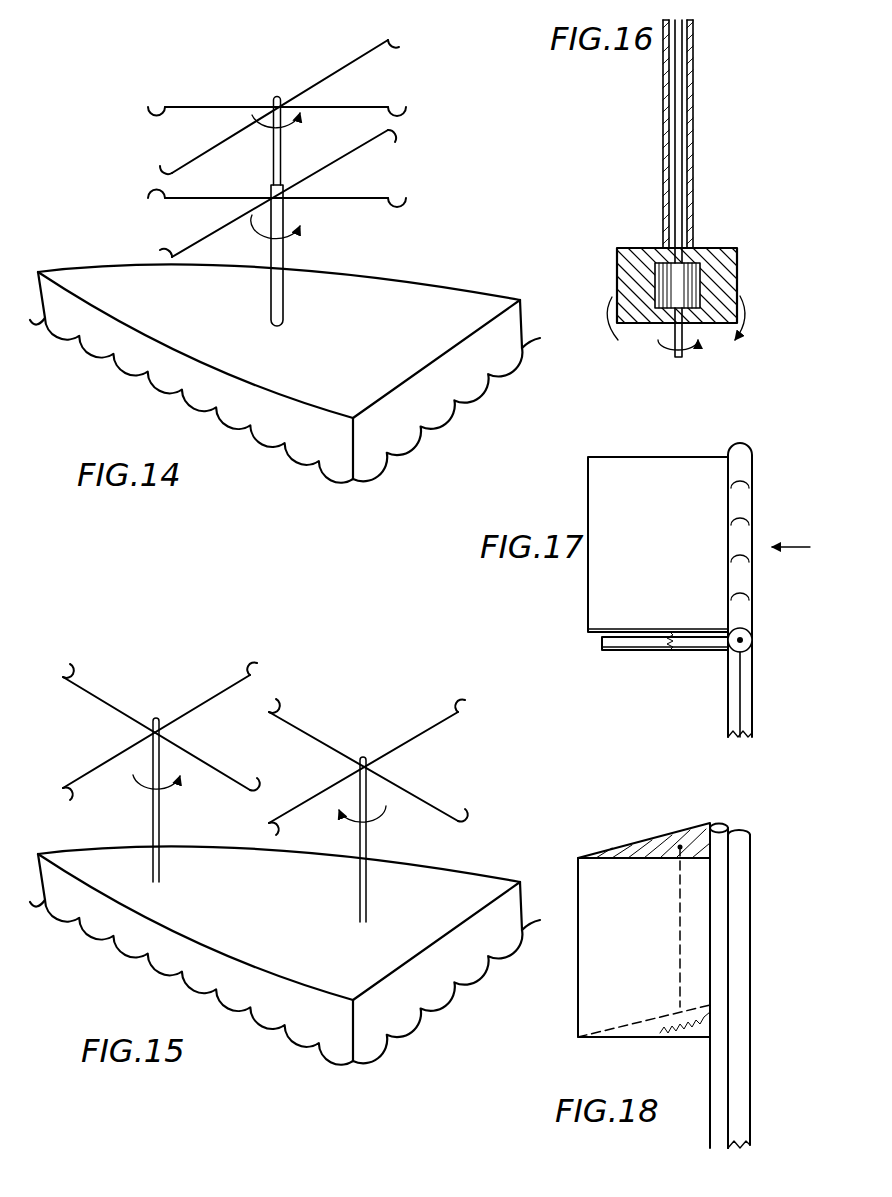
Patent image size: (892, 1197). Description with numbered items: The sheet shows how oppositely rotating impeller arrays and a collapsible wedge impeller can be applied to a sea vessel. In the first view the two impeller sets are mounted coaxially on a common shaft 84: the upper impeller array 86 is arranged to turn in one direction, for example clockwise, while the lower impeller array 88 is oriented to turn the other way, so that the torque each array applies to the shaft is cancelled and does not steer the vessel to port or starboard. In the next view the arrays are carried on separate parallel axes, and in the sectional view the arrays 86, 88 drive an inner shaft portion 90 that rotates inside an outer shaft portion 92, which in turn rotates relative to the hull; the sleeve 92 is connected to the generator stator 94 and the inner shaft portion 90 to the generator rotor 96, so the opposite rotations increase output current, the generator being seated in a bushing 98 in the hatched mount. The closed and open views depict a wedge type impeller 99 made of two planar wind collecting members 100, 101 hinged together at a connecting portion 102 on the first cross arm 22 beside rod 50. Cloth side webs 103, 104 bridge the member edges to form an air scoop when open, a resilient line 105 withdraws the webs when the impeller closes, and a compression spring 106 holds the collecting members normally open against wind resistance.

In FIG. 14, the common shaft 84 is at (278, 243).
In FIG. 14, the upper impeller array 86 is at (320, 60).
In FIG. 15, the upper impeller array 86 is at (390, 735).
In FIG. 14, the lower impeller array 88 is at (378, 181).
In FIG. 15, the lower impeller array 88 is at (149, 668).
In FIG. 16, the inner shaft portion 90 is at (677, 58).
In FIG. 16, the outer shaft portion 92 is at (665, 146).
In FIG. 16, the electric generator stator 94 is at (740, 286).
In FIG. 16, the generator rotor 96 is at (714, 260).
In FIG. 16, the bushing 98 is at (670, 283).
In FIG. 17, the wedge type impeller 99 is at (612, 561).
In FIG. 18, the wedge type impeller 99 is at (604, 930).
In FIG. 17, the planar wind collecting member 100 is at (607, 597).
In FIG. 18, the planar wind collecting member 100 is at (646, 977).
In FIG. 17, the planar wind collecting member 101 is at (618, 638).
In FIG. 17, the connecting portion 102 is at (745, 622).
In FIG. 18, the side web 103 is at (637, 1028).
In FIG. 18, the side web 104 is at (670, 848).
In FIG. 18, the resilient line 105 is at (680, 933).
In FIG. 17, the spring 106 is at (668, 640).
In FIG. 18, the spring 106 is at (685, 1044).
In FIG. 17, the rod 50 is at (738, 688).
In FIG. 18, the rod 50 is at (710, 1130).
In FIG. 17, the first cross arm 22 is at (747, 712).
In FIG. 18, the first cross arm 22 is at (743, 1078).